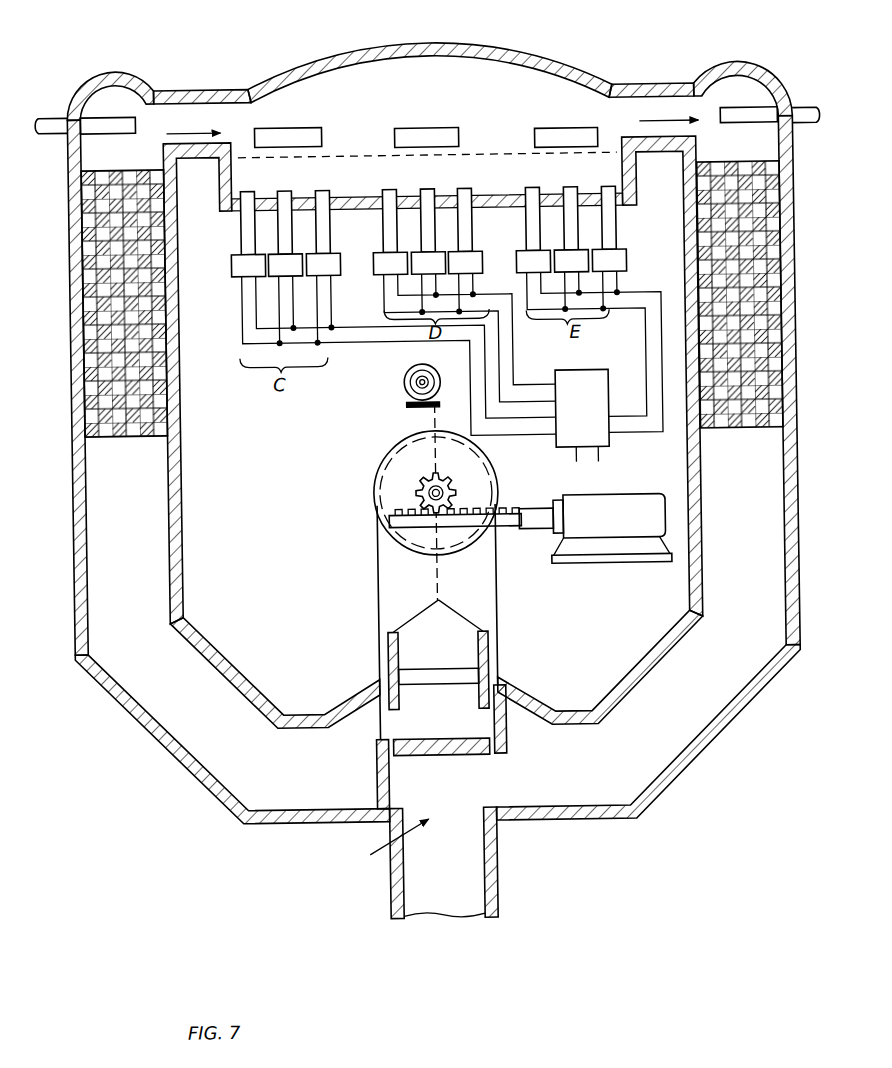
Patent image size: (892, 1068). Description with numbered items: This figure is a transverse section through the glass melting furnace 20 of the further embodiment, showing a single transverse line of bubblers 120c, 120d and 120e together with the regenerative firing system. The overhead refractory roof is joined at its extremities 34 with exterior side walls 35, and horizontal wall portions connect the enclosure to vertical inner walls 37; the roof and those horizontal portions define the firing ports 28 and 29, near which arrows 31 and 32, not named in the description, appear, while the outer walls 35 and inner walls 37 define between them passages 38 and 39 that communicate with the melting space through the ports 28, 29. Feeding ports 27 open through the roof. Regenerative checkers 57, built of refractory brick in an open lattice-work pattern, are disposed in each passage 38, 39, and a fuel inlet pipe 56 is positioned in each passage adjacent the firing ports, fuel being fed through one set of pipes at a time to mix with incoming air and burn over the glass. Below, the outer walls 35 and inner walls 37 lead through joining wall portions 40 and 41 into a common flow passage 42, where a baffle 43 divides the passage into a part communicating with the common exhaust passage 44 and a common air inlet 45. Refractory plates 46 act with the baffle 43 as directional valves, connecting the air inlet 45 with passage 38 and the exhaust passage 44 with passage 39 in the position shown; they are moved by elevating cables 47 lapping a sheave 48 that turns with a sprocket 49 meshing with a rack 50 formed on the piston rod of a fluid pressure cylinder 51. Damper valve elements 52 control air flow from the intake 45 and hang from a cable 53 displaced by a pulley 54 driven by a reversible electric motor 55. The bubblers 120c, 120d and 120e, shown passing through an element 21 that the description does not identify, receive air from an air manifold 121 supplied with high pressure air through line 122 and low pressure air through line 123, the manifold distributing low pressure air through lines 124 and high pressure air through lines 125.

The furnace 20 is at (385, 42).
The nozzle plenum wall 21 is at (496, 206).
The feeding ports 27 is at (305, 126).
The firing port 28 is at (184, 104).
The firing port 29 is at (626, 106).
The left flow arrow 31 is at (193, 120).
The right flow arrow 32 is at (690, 127).
The roof extremity joint 34 is at (139, 68).
The exterior side walls 35 is at (72, 300).
The vertical inner walls 37 is at (183, 475).
The passage 38 is at (130, 518).
The passage 39 is at (745, 505).
The joining wall portion 40 is at (180, 765).
The joining wall portion 41 is at (228, 665).
The common flow passage 42 is at (386, 844).
The baffle 43 is at (435, 756).
The common exhaust passage 44 is at (447, 881).
The common air inlet 45 is at (430, 685).
The refractory plates 46 is at (373, 777).
The elevating cables 47 is at (377, 611).
The sheave 48 is at (393, 467).
The sprocket 49 is at (421, 492).
The rack 50 is at (409, 516).
The reciprocating fluid pressure actuated cylinder 51 is at (605, 527).
The damper valve elements 52 is at (397, 660).
The cable 53 is at (437, 580).
The pulley 54 is at (409, 404).
The reversible electric motor 55 is at (406, 385).
The fuel inlet pipe 56 is at (124, 114).
The regenerative checkers 57 is at (143, 334).
The bubbler 120c is at (323, 222).
The bubbler 120d is at (468, 226).
The bubbler 120e is at (539, 228).
The air manifold 121 is at (592, 373).
The high pressure air line 122 is at (577, 463).
The low pressure air line 123 is at (599, 462).
The low pressure distribution lines 124 is at (352, 326).
The high pressure distribution lines 125 is at (352, 344).